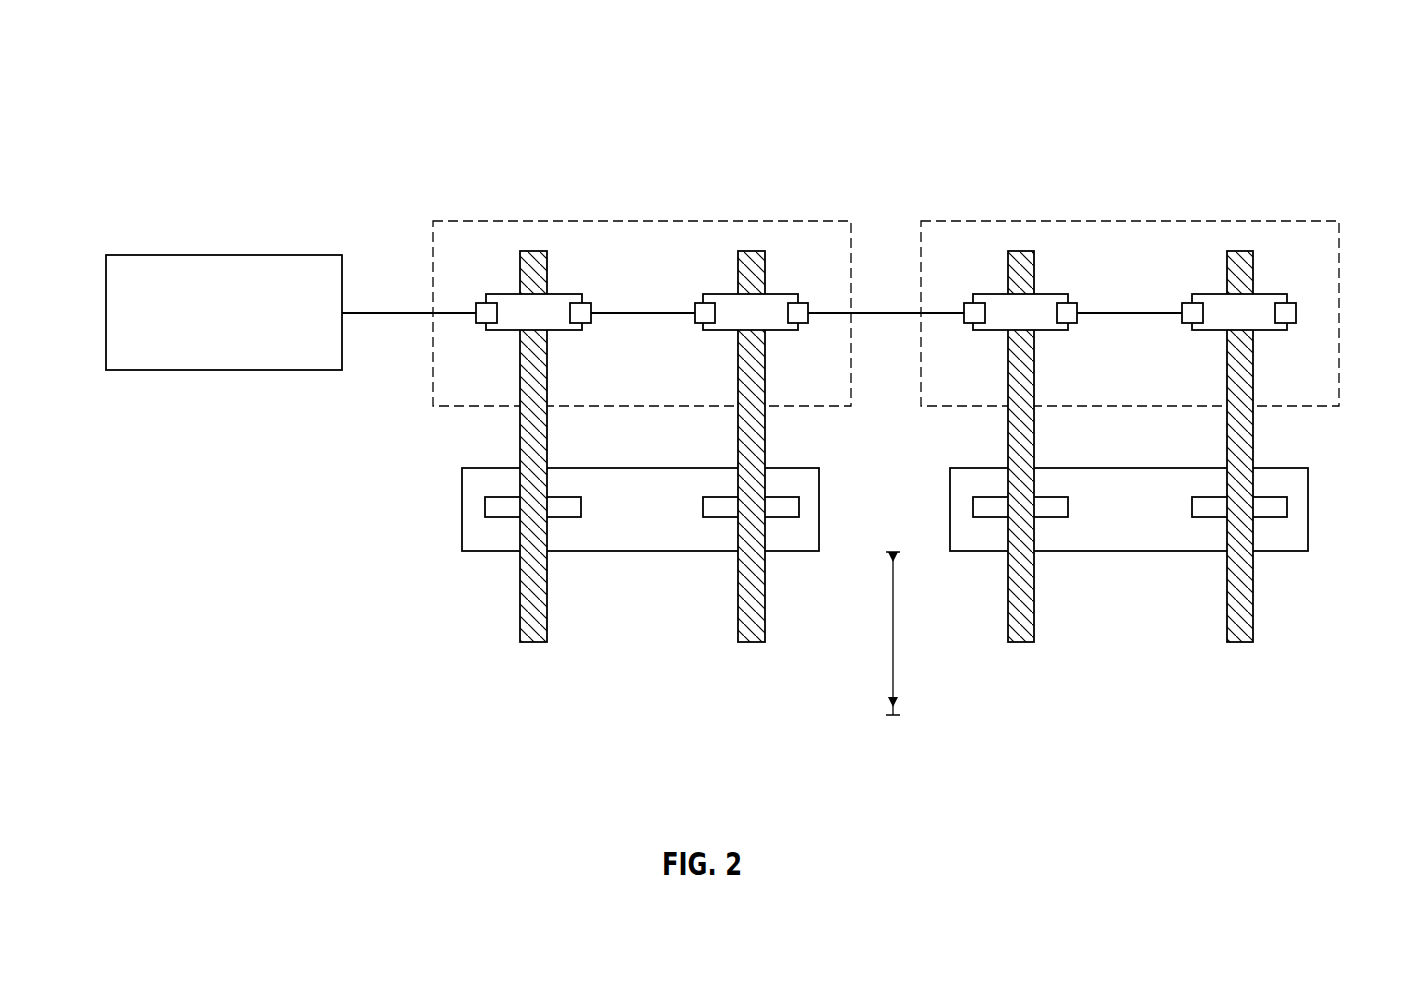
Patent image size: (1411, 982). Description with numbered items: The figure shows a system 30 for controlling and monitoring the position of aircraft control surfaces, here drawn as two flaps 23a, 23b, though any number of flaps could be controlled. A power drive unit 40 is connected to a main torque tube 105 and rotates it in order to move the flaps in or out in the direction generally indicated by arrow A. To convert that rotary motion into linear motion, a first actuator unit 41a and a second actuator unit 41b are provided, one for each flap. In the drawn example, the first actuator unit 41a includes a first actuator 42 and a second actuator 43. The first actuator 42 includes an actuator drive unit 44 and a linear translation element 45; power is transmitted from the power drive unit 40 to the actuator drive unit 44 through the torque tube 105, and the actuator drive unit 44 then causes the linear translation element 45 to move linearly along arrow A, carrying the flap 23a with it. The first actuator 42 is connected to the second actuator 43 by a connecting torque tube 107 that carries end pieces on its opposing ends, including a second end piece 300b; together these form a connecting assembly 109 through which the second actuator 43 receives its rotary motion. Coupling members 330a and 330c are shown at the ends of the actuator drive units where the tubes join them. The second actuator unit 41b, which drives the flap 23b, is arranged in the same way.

The system 30 is at (161, 163).
The power drive unit 40 is at (158, 255).
The torque tube 105 is at (408, 313).
The actuator drive unit 44 is at (570, 296).
The coupling 330a is at (487, 300).
The second end piece 300b is at (580, 302).
The connecting torque tube 107 is at (622, 315).
The connecting assembly 109 is at (704, 345).
The coupling 330c is at (710, 298).
The first actuator unit 41a is at (765, 221).
The second actuator unit 41b is at (1192, 221).
The first actuator 42 is at (475, 362).
The second actuator 43 is at (787, 391).
The linear translation element 45 is at (520, 580).
The flap 23a is at (637, 551).
The flap 23b is at (1138, 551).
The arrow A is at (893, 636).